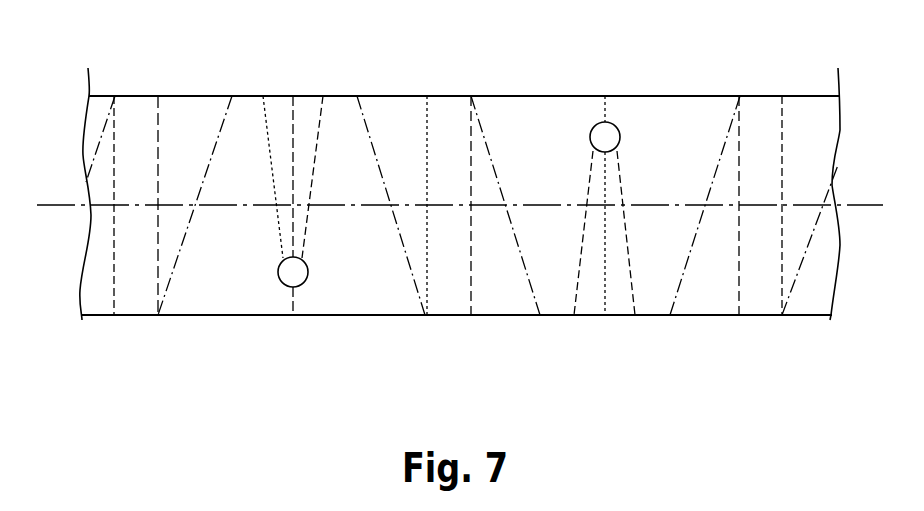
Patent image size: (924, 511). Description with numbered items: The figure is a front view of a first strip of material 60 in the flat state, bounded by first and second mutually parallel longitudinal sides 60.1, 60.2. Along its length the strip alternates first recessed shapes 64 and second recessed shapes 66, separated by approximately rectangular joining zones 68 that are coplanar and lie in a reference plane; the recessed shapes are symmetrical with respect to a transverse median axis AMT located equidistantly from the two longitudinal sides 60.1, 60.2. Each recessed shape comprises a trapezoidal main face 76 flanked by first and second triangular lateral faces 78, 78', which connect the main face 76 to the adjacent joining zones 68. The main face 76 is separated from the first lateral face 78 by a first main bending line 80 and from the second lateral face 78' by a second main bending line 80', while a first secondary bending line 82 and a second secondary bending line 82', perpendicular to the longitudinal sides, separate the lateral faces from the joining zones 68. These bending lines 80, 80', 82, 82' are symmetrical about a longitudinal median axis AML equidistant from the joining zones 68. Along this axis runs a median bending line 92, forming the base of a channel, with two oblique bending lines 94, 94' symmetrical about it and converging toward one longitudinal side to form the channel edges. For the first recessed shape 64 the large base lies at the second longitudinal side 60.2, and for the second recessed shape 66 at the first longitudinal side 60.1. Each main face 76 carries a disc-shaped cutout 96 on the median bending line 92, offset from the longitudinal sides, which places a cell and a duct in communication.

The first strip of material 60 is at (460, 162).
The first longitudinal side 60.1 is at (713, 97).
The second longitudinal side 60.2 is at (770, 317).
The first recessed shape 64 is at (279, 47).
The second recessed shape 66 is at (591, 364).
The joining zone 68 is at (472, 140).
The main face 76 is at (662, 128).
The first triangular lateral face 78 is at (340, 215).
The second triangular lateral face 78' is at (564, 203).
The first main bending line 80 is at (349, 205).
The second main bending line 80' is at (548, 213).
The first secondary bending line 82 is at (285, 210).
The second secondary bending line 82' is at (600, 212).
The median bending line 92 is at (293, 128).
The first oblique bending line 94 is at (420, 214).
The second oblique bending line 94' is at (476, 210).
The cutout 96 is at (612, 124).
The transverse median axis AMT is at (55, 203).
The longitudinal median axis AML is at (598, 162).